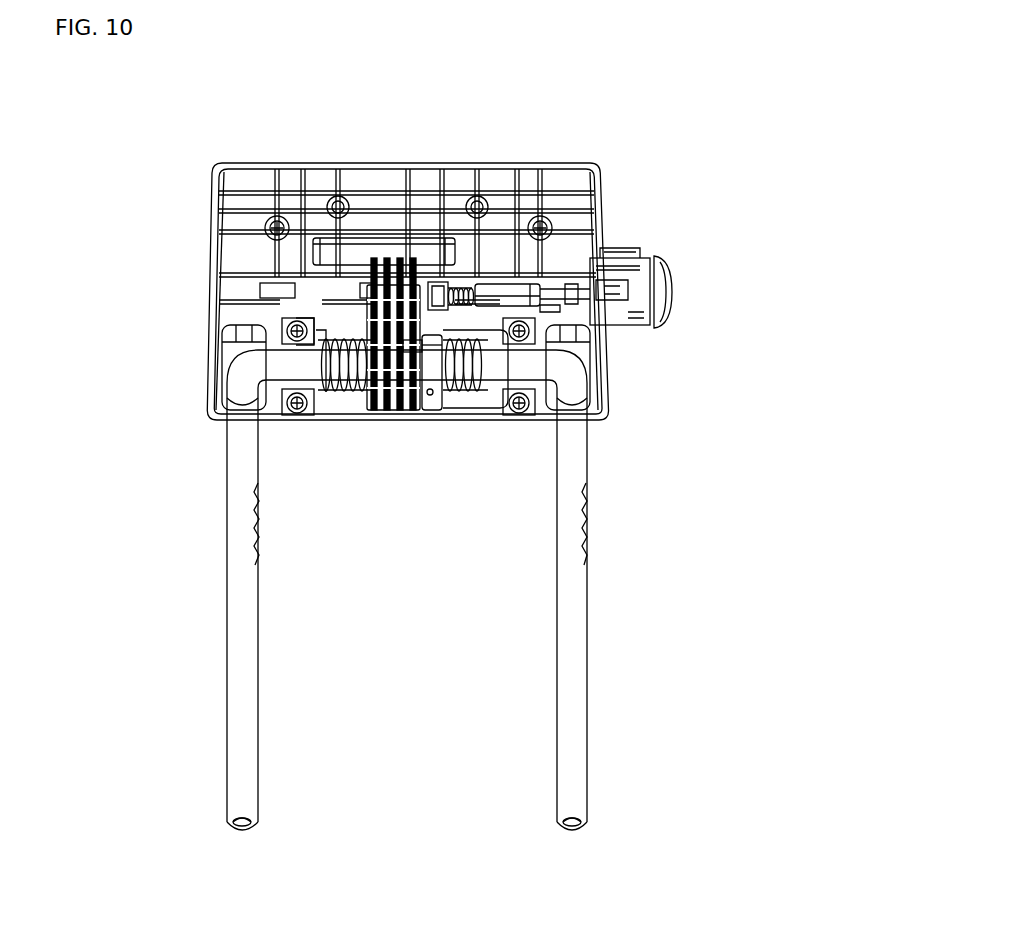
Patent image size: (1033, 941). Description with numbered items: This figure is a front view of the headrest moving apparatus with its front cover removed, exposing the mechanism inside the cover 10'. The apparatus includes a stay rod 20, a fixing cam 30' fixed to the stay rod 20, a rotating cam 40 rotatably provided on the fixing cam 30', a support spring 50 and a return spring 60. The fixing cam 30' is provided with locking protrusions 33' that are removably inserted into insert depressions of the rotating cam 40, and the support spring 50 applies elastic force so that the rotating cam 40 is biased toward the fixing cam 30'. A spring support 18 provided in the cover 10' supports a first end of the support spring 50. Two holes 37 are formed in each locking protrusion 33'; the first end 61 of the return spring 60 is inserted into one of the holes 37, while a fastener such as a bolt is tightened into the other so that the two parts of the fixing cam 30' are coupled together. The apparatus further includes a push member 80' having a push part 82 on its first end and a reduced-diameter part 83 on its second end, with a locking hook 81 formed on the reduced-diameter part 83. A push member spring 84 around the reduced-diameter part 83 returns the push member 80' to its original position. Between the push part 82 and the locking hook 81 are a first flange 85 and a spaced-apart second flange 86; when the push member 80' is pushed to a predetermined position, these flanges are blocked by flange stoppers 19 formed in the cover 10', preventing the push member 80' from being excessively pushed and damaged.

The cover 10′ is at (606, 170).
The locking protrusions 33′ is at (437, 300).
The push member spring 84 is at (450, 292).
The reduced-diameter part 83 is at (468, 295).
The first flange 85 is at (481, 292).
The flange stoppers 19 is at (538, 290).
The push member 80′ is at (669, 256).
The push part 82 is at (658, 298).
The second flange 86 is at (541, 299).
The rotating cam 40 is at (372, 423).
The support spring 50 is at (345, 376).
The return spring 60 is at (481, 397).
The first end 61 is at (441, 352).
The holes 37 is at (428, 395).
The locking hook 81 is at (410, 346).
The spring support 18 is at (312, 345).
The fixing cam 30′ is at (327, 338).
The stay rod 20 is at (600, 447).